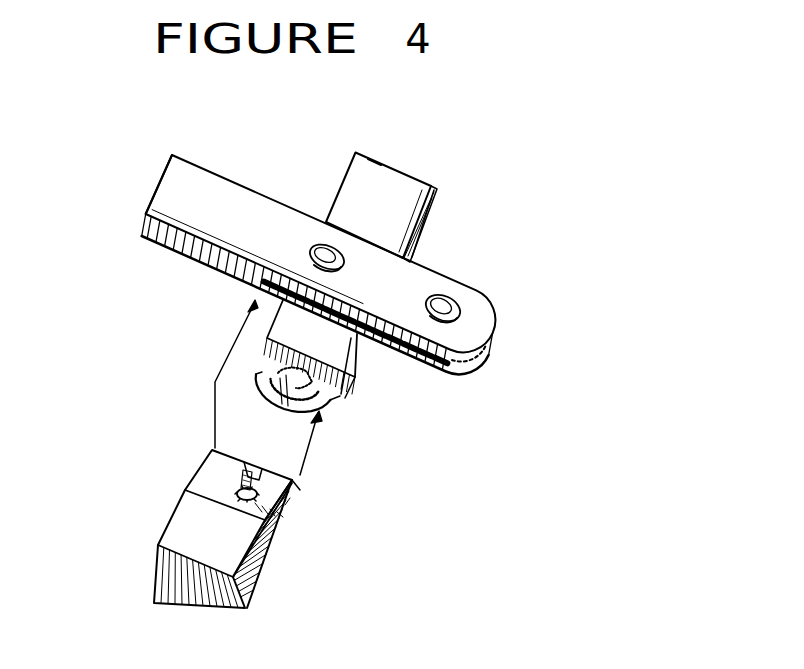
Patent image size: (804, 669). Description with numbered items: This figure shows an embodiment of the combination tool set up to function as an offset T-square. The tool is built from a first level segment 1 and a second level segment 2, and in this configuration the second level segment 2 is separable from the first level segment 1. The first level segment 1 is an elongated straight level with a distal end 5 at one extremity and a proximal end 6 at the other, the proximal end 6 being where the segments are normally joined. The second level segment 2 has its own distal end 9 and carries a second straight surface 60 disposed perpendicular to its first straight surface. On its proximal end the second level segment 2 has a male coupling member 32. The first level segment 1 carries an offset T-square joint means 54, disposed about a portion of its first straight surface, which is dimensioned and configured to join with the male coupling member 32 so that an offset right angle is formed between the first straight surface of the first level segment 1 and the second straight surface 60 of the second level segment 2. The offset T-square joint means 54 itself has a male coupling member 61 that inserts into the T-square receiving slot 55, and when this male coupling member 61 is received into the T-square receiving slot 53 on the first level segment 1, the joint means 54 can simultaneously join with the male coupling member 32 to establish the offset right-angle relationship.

The first level segment 1 is at (319, 264).
The second level segment 2 is at (381, 208).
The distal end 5 is at (158, 195).
The proximal end 6 is at (498, 318).
The distal end 9 is at (374, 148).
The male coupling member 32 is at (323, 406).
The T-square receiving slot 53 is at (262, 290).
The offset T-square joint means 54 is at (223, 529).
The T-square receiving slot 55 is at (303, 472).
The second straight surface 60 is at (428, 226).
The male coupling member 61 is at (219, 479).